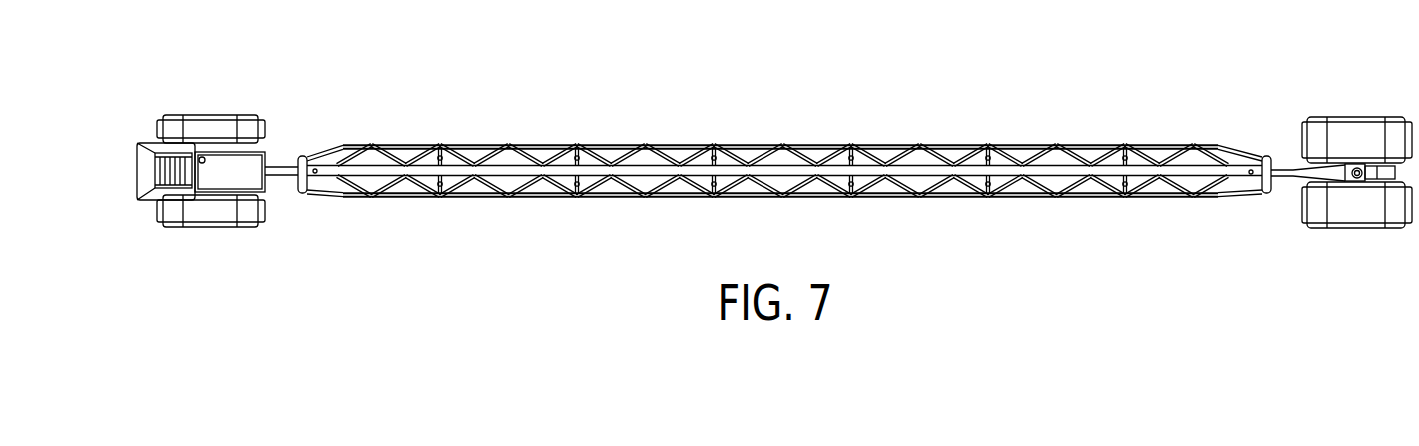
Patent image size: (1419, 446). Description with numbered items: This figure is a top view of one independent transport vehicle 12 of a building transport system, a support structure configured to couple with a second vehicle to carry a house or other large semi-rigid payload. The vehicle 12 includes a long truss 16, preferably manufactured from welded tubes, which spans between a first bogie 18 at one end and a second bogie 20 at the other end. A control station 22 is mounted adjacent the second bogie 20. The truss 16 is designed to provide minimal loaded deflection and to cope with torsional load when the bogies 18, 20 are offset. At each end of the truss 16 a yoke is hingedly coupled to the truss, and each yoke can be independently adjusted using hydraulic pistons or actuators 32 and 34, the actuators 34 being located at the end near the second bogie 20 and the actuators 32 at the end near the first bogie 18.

The first independent transport vehicle 12 is at (683, 142).
The truss 16 is at (788, 148).
The first bogie 18 is at (1357, 117).
The second bogie 20 is at (222, 115).
The control station 22 is at (147, 175).
The hydraulic piston 32 is at (1243, 148).
The hydraulic piston 34 is at (333, 147).